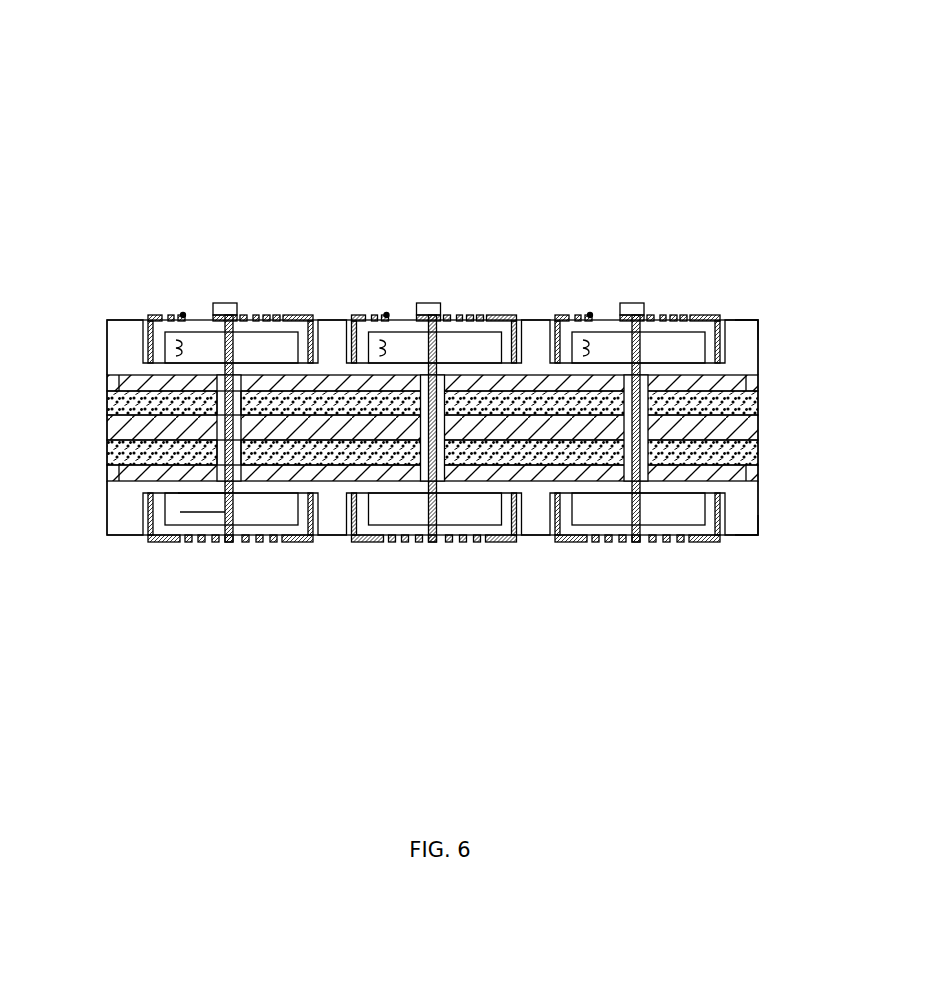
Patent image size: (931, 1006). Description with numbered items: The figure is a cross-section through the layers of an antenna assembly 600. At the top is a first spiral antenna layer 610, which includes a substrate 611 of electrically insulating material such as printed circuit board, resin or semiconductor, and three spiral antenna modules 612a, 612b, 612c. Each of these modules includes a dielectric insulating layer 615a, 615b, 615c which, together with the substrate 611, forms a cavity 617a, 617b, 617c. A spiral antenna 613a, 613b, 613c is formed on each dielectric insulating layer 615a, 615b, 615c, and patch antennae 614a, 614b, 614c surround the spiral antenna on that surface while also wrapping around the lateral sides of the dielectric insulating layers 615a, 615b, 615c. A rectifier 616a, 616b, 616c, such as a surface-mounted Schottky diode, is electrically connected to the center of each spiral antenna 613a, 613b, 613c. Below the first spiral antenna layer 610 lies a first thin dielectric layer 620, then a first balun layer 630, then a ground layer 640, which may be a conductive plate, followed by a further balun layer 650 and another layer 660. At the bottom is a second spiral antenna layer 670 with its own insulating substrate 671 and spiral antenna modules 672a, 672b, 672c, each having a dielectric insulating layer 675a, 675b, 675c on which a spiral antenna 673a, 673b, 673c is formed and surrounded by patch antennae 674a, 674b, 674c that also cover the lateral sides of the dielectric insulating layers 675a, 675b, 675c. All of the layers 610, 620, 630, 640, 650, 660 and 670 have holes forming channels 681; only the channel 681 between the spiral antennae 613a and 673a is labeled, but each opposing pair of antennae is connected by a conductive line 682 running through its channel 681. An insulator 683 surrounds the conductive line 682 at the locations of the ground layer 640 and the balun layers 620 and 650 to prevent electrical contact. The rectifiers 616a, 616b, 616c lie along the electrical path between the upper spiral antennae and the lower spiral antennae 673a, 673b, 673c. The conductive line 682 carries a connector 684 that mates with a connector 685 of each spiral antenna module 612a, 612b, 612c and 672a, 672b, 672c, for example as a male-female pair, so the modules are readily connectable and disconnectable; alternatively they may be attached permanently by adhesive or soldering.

The antenna assembly 600 is at (488, 78).
The first spiral antenna layer 610 is at (765, 340).
The substrate 611 is at (737, 316).
The spiral antenna module 612a is at (210, 344).
The spiral antenna module 612b is at (421, 344).
The spiral antenna module 612c is at (625, 344).
The spiral antenna 613a is at (205, 315).
The spiral antenna 613b is at (408, 315).
The spiral antenna 613c is at (612, 315).
The patch antenna 614a is at (300, 315).
The patch antenna 614b is at (504, 315).
The patch antenna 614c is at (708, 315).
The dielectric insulating layer 615a is at (182, 313).
The dielectric insulating layer 615b is at (385, 313).
The dielectric insulating layer 615c is at (589, 313).
The rectifier 616a is at (224, 304).
The rectifier 616b is at (428, 304).
The rectifier 616c is at (631, 304).
The cavity 617a is at (176, 348).
The cavity 617b is at (380, 348).
The cavity 617c is at (583, 348).
The first thin dielectric layer 620 is at (765, 383).
The first balun layer 630 is at (765, 410).
The ground layer 640 is at (765, 430).
The balun layer 650 is at (765, 452).
The layer 660 is at (765, 472).
The second spiral antenna layer 670 is at (765, 525).
The substrate 671 is at (737, 540).
The spiral antenna module 672a is at (197, 591).
The spiral antenna module 672b is at (415, 593).
The spiral antenna module 672c is at (619, 593).
The spiral antenna 673a is at (203, 542).
The spiral antenna 673b is at (406, 542).
The spiral antenna 673c is at (609, 542).
The patch antenna 674a is at (160, 542).
The patch antenna 674b is at (364, 542).
The patch antenna 674c is at (567, 542).
The dielectric insulating layer 675a is at (300, 542).
The dielectric insulating layer 675b is at (503, 542).
The dielectric insulating layer 675c is at (709, 542).
The channel 681 is at (234, 393).
The conductive line 682 is at (222, 397).
The insulator 683 is at (217, 440).
The connector 684 is at (178, 493).
The connector 685 is at (180, 512).